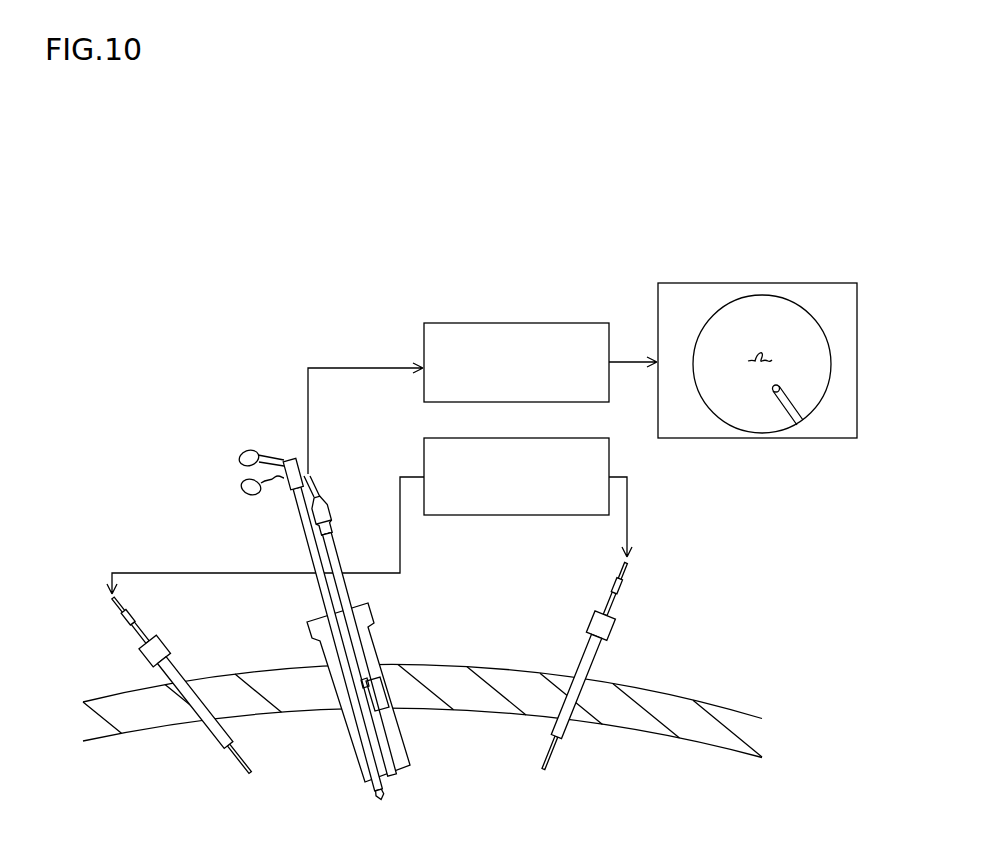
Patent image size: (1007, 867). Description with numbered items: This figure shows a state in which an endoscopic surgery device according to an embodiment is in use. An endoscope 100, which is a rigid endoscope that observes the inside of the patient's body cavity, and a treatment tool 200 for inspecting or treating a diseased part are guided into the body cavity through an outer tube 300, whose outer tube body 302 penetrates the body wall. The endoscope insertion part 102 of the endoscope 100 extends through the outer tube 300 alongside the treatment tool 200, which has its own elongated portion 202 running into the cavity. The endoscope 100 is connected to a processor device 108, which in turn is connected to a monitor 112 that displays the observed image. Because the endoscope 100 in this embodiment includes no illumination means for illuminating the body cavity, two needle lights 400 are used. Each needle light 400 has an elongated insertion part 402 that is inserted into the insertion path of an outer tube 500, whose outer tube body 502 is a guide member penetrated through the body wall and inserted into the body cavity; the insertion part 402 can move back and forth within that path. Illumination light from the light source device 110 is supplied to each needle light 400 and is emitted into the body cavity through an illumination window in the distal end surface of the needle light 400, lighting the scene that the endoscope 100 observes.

The endoscope 100 is at (347, 492).
The endoscope insertion part 102 is at (339, 560).
The processor device 108 is at (520, 323).
The light source device 110 is at (515, 517).
The monitor 112 is at (763, 283).
The treatment tool 200 is at (222, 473).
The treatment tool insertion portion 202 is at (322, 598).
The outer tube 300 is at (386, 609).
The outer tube body 302 is at (373, 645).
The needle light 400 is at (102, 628).
The insertion part 402 is at (613, 608).
The outer tube 500 is at (174, 633).
The outer tube body 502 is at (177, 667).